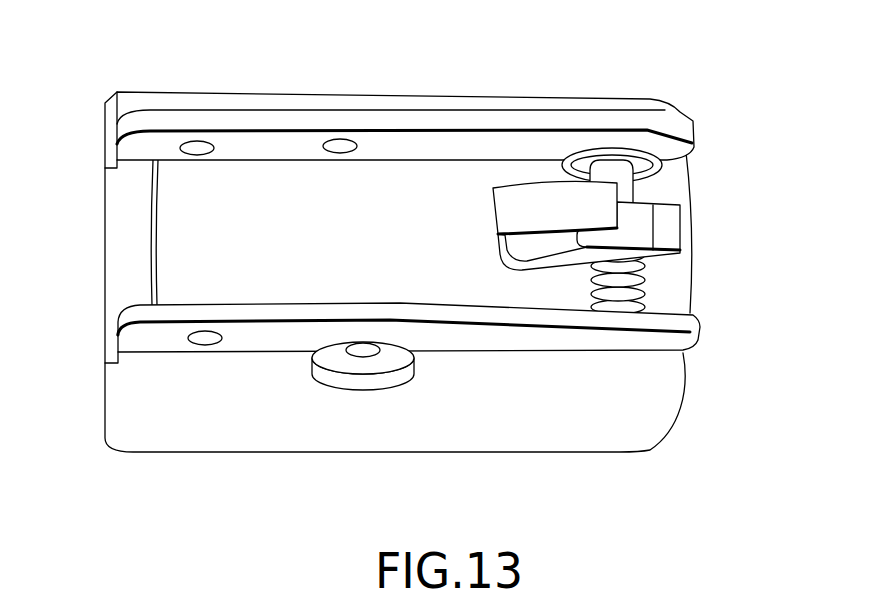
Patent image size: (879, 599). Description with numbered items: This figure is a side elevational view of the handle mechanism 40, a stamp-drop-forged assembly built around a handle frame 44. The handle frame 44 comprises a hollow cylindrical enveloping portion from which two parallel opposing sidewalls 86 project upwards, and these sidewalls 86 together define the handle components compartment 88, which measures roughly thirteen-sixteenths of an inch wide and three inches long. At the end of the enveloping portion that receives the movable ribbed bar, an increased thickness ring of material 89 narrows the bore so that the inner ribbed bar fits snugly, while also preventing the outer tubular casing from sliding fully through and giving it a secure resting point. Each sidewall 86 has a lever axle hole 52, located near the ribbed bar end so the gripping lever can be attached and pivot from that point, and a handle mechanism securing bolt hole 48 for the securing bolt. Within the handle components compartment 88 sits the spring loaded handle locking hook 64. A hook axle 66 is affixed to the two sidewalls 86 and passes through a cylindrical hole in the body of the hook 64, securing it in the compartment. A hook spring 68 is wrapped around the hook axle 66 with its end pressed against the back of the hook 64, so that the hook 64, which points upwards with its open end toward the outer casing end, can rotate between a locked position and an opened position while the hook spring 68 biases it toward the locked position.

The handle mechanism 40 is at (471, 103).
The handle frame 44 is at (545, 417).
The handle mechanism securing bolt hole 48 is at (363, 350).
The lever axle hole 52 is at (200, 155).
The spring loaded handle locking hook 64 is at (672, 225).
The hook axle 66 is at (618, 170).
The hook spring 68 is at (700, 325).
The sidewalls 86 is at (415, 313).
The handle components compartment 88 is at (712, 283).
The increased thickness ring of material 89 is at (132, 237).